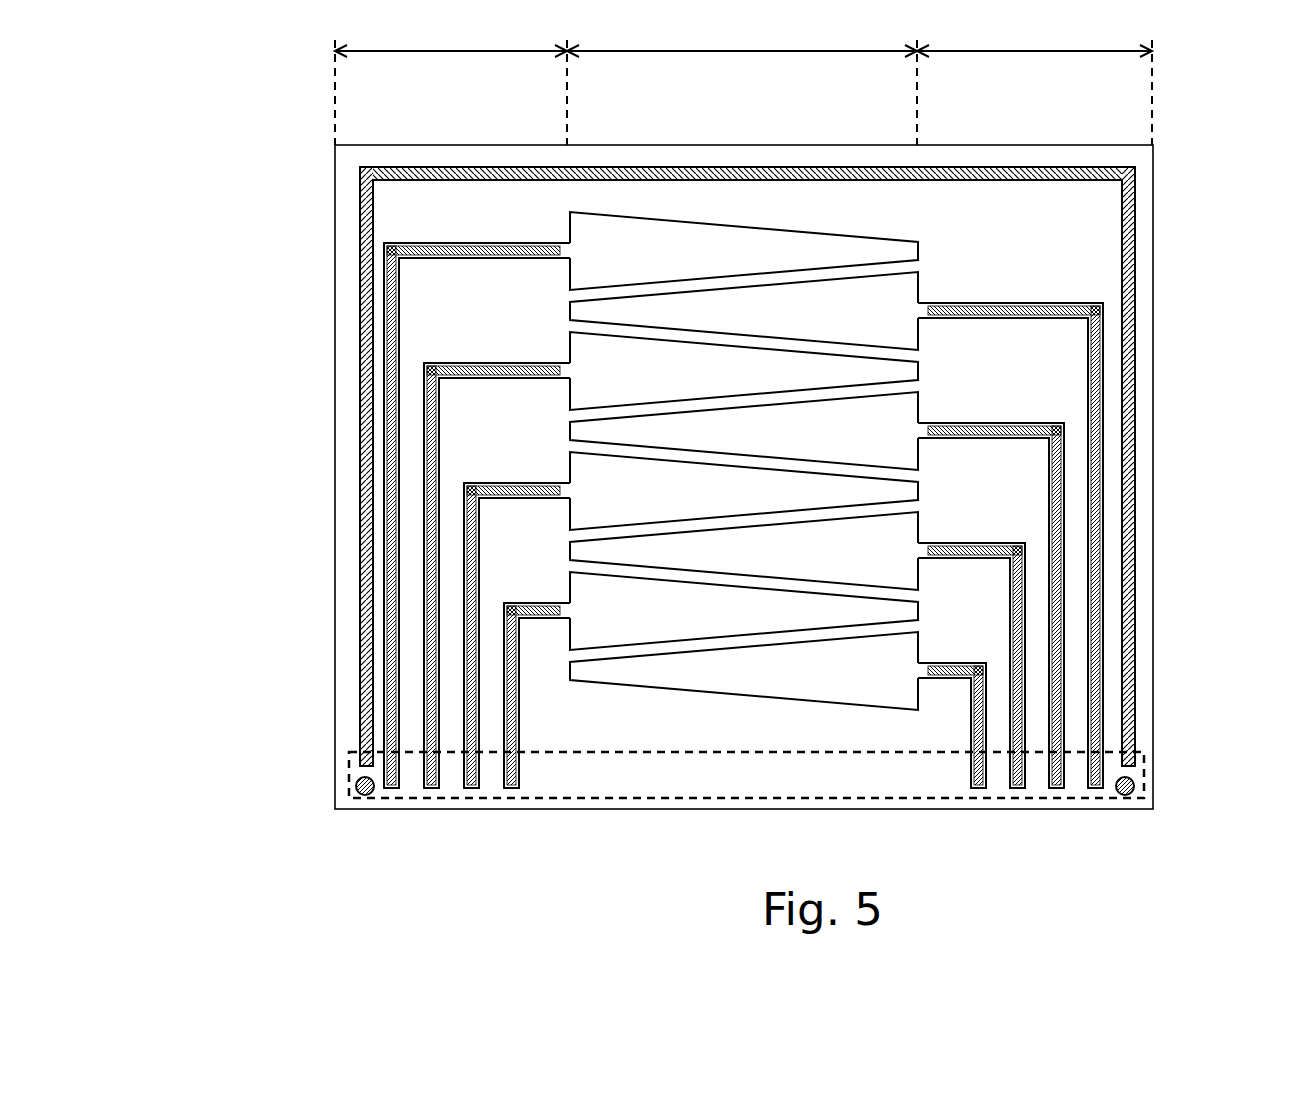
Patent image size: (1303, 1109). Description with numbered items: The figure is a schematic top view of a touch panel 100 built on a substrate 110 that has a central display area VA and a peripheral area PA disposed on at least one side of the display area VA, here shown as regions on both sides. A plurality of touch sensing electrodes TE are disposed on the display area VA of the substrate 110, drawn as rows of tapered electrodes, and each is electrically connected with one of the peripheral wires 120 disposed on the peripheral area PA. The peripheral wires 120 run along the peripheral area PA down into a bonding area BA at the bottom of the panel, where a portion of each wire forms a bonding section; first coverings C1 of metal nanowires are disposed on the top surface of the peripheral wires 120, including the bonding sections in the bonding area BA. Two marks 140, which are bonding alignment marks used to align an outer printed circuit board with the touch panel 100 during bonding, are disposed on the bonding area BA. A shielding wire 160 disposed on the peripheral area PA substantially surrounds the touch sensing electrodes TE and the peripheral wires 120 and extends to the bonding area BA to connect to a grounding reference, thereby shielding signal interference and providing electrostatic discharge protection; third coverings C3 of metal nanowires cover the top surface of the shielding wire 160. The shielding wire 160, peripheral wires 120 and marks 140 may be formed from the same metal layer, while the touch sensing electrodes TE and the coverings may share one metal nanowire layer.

The touch panel 100 is at (207, 128).
The substrate 110 is at (1146, 199).
The peripheral wires 120 is at (390, 288).
The marks 140 is at (358, 795).
The shielding wire 160 is at (362, 187).
The first coverings C1 is at (385, 342).
The third coverings C3 is at (357, 233).
The touch sensing electrodes TE is at (717, 247).
The peripheral area PA is at (743, 81).
The display area VA is at (742, 37).
The bonding area BA is at (1151, 798).